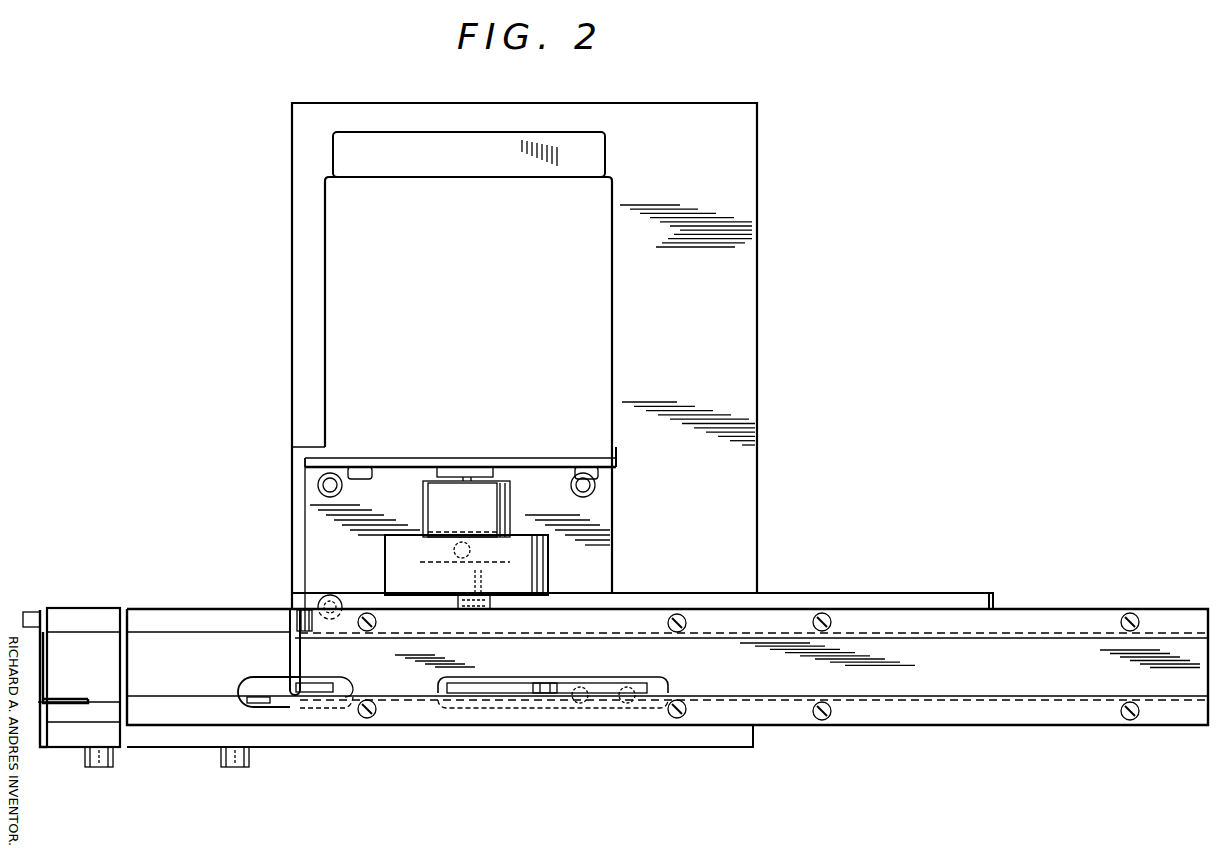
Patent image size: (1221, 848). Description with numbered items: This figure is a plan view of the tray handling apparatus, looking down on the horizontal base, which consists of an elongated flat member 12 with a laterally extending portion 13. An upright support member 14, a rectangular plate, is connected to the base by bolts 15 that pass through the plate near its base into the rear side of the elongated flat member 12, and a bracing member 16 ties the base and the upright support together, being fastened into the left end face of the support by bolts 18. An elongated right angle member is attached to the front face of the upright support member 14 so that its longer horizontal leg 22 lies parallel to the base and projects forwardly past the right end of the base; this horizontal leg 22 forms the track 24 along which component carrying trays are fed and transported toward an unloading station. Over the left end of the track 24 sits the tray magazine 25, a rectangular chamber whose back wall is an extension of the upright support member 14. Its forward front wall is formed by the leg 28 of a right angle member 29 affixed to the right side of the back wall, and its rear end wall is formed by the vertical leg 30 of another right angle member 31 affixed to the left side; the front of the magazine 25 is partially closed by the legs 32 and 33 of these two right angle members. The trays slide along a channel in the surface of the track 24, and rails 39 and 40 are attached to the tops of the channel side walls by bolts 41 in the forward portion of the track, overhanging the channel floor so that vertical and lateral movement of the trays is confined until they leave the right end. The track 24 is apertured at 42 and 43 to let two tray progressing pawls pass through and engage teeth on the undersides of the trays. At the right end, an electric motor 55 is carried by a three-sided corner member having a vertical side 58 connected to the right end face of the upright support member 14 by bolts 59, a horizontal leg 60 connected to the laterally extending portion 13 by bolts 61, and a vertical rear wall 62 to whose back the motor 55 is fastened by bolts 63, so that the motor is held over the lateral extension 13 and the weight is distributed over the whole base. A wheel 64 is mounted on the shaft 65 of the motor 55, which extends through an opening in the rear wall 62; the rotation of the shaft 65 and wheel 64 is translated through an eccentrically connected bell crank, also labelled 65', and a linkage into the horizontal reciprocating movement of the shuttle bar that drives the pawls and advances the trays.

The elongated flat member 12 is at (492, 748).
The laterally extending portion 13 is at (758, 543).
The upright support member 14 is at (256, 608).
The bolts 15 is at (113, 757).
The bracing member 16 is at (38, 747).
The bolts 18 is at (30, 608).
The horizontal leg 22 is at (218, 722).
The track 24 is at (935, 700).
The tray magazine 25 is at (85, 637).
The leg 28 is at (297, 658).
The right angle member 29 is at (292, 705).
The vertical leg 30 is at (47, 674).
The right angle member 31 is at (43, 660).
The leg 32 is at (268, 680).
The leg 33 is at (85, 703).
The rail 39 is at (1200, 723).
The rail 40 is at (1196, 618).
The bolts 41 is at (677, 613).
The aperture 42 is at (655, 673).
The aperture 43 is at (355, 678).
The electric motor 55 is at (467, 326).
The vertical side 58 is at (290, 502).
The bolts 59 is at (300, 608).
The horizontal leg 60 is at (346, 575).
The bolts 61 is at (341, 493).
The vertical rear wall 62 is at (617, 462).
The bolts 63 is at (356, 467).
The wheel 64 is at (540, 578).
The shaft 65 is at (642, 587).
The bracket 65' is at (466, 477).